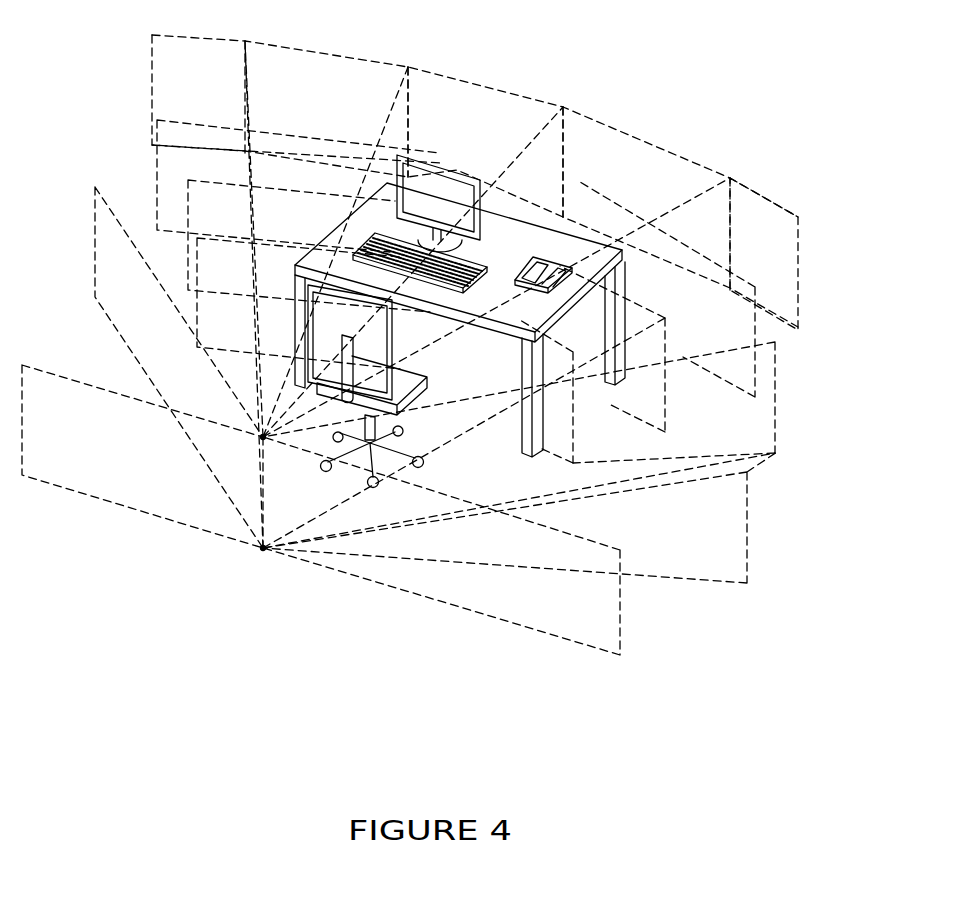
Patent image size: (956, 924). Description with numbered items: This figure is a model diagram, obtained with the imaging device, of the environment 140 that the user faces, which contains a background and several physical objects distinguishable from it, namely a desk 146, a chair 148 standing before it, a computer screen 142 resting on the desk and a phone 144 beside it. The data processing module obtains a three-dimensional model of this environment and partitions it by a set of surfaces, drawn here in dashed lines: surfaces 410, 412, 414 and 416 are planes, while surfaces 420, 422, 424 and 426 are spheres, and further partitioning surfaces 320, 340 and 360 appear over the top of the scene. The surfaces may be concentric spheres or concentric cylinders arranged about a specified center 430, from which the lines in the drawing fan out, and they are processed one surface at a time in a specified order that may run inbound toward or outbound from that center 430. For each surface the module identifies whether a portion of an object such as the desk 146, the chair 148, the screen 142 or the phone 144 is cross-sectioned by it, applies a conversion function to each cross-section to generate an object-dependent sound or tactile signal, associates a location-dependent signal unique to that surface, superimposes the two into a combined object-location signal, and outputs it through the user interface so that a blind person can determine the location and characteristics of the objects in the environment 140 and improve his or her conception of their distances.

The environment 140 is at (352, 113).
The computer screen 142 is at (470, 170).
The phone 144 is at (547, 253).
The desk 146 is at (597, 245).
The chair 148 is at (325, 345).
The display region 320 is at (317, 64).
The display region 340 is at (447, 90).
The display region 360 is at (607, 136).
The plane surface 410 is at (621, 612).
The plane surface 412 is at (749, 520).
The plane surface 414 is at (777, 405).
The plane surface 416 is at (800, 240).
The sphere surface 420 is at (197, 305).
The sphere surface 422 is at (188, 197).
The sphere surface 424 is at (157, 165).
The sphere surface 426 is at (152, 66).
The specified center 430 is at (263, 548).